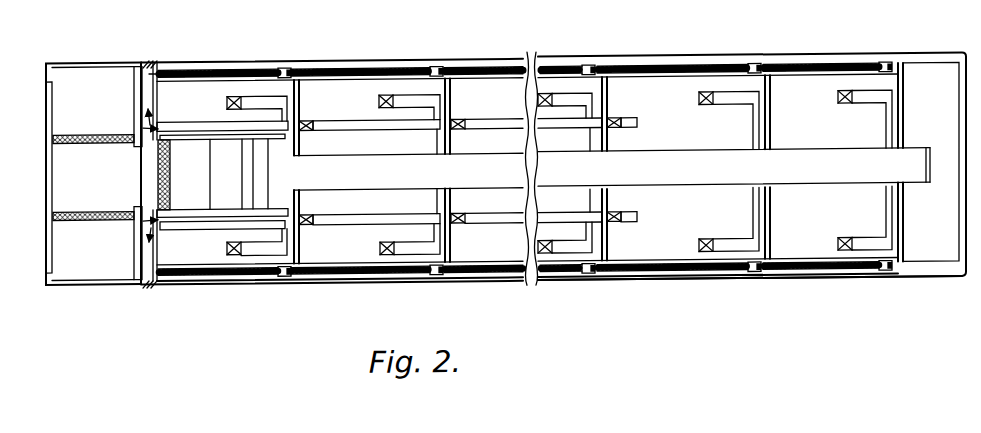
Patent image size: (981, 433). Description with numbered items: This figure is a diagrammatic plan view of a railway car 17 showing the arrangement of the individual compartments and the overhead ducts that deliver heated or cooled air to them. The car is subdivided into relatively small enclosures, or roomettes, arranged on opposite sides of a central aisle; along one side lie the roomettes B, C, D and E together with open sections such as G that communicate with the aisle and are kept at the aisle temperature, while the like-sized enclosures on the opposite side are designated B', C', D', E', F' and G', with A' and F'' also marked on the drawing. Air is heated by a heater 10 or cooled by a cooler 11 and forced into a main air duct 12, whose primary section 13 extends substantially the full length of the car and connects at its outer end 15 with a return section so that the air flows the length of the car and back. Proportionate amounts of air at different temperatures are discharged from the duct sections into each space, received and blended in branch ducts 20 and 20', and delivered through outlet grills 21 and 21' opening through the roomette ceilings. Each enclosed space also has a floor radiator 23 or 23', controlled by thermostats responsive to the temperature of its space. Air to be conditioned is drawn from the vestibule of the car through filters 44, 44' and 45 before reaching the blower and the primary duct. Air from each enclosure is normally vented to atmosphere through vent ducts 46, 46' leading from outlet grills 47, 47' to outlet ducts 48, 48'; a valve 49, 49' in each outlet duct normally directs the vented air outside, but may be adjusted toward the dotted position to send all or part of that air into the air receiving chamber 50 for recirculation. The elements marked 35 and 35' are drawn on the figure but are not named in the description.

The heater 10 is at (265, 172).
The cooler 11 is at (212, 172).
The main air duct 12 is at (709, 150).
The primary section 13 is at (418, 178).
The outer end 15 is at (913, 160).
The railway car 17 is at (677, 40).
The branch duct 20 is at (641, 122).
The branch duct 20' is at (641, 219).
The outlet grill 21 is at (615, 102).
The outlet grill 21' is at (616, 231).
The floor radiator 23 is at (518, 52).
The floor radiator 23' is at (518, 294).
The carriage 35 is at (590, 51).
The lower carriage 35' is at (585, 289).
The filter 44 is at (71, 151).
The filter 44' is at (74, 233).
The filter 45 is at (172, 146).
The vent duct 46 is at (475, 112).
The vent duct 46' is at (475, 208).
The outlet grill 47 is at (476, 110).
The outlet grill 47' is at (471, 224).
The outlet duct 48 is at (120, 107).
The outlet duct 48' is at (109, 244).
The valve 49 is at (141, 139).
The valve 49' is at (140, 209).
The air receiving chamber 50 is at (58, 187).
The compartment A' is at (494, 165).
The roomette B is at (332, 129).
The roomette B' is at (309, 250).
The roomette C is at (470, 130).
The roomette C' is at (461, 248).
The roomette D is at (579, 126).
The roomette D' is at (573, 250).
The roomette E is at (714, 125).
The roomette E' is at (708, 249).
The open section F' is at (238, 132).
The compartment F'' is at (236, 219).
The open section G is at (849, 133).
The open section G' is at (844, 250).